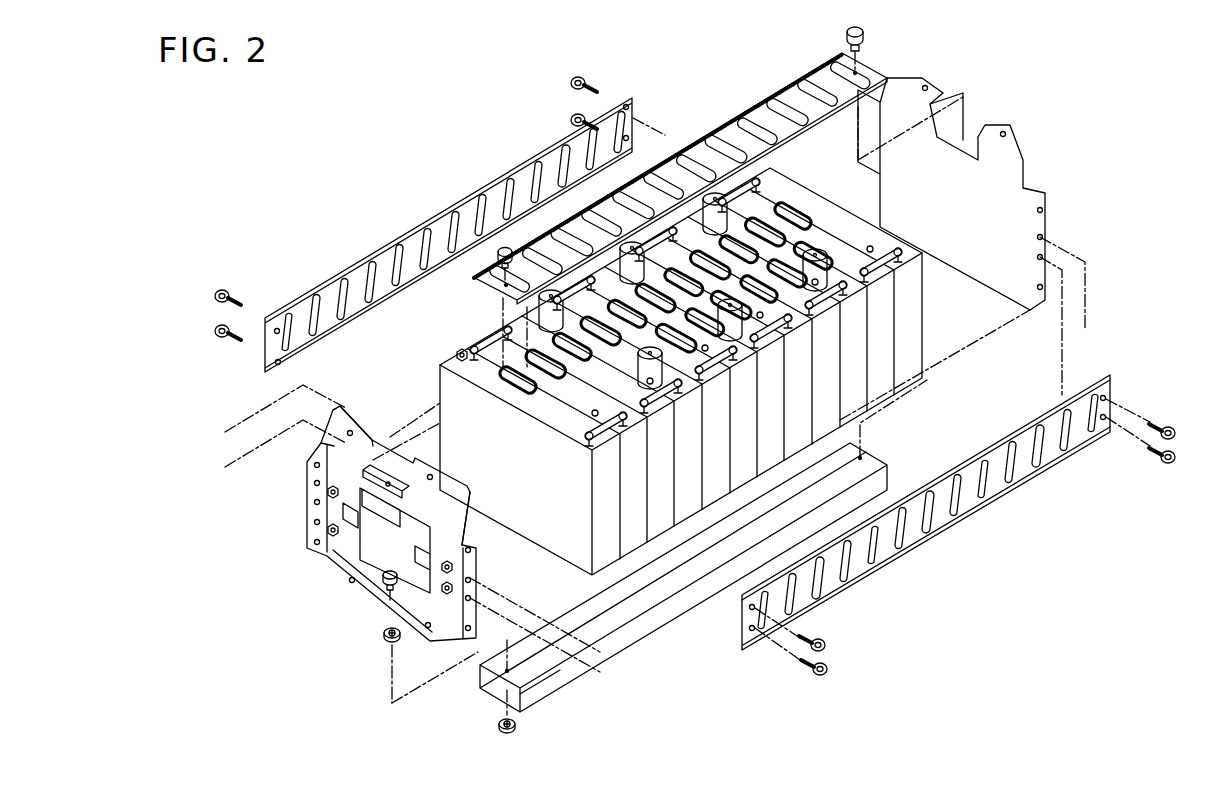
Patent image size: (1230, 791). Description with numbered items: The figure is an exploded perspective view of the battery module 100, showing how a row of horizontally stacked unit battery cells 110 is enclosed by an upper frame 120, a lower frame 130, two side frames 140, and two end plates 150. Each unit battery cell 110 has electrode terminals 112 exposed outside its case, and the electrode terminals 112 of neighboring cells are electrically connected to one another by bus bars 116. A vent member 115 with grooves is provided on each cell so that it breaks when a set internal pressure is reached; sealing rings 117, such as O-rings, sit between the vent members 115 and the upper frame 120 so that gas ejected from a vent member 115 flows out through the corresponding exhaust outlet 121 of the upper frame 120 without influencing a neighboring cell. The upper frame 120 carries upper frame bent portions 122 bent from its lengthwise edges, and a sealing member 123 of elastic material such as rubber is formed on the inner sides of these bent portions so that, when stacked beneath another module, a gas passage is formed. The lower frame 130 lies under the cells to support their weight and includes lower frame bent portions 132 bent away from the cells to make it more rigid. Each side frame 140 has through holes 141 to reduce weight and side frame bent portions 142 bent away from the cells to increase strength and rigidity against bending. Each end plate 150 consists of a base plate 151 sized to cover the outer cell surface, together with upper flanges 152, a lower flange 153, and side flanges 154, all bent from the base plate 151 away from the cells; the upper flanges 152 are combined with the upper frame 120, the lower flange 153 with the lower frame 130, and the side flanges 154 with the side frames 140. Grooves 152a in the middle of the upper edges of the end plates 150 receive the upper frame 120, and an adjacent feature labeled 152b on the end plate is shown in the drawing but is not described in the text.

The battery module 100 is at (1180, 49).
The unit battery cells 110 is at (885, 393).
The electrode terminals 112 is at (486, 337).
The vent member 115 is at (530, 400).
The bus bars 116 is at (887, 262).
The sealing rings 117 is at (508, 372).
The upper frame 120 is at (692, 155).
The exhaust outlet 121 is at (742, 128).
The upper frame bent portions 122 is at (878, 80).
The sealing member 123 is at (775, 95).
The lower frame 130 is at (639, 596).
The lower frame bent portions 132 is at (542, 692).
The side frames 140 is at (695, 376).
The through holes 141 is at (367, 283).
The side frame bent portions 142 is at (413, 233).
The end plate 150 is at (631, 373).
The base plate 151 is at (378, 578).
The upper flanges 152 is at (308, 478).
The grooves 152a is at (401, 463).
The mounting tab 152b is at (330, 438).
The lower flange 153 is at (381, 598).
The side flanges 154 is at (313, 523).